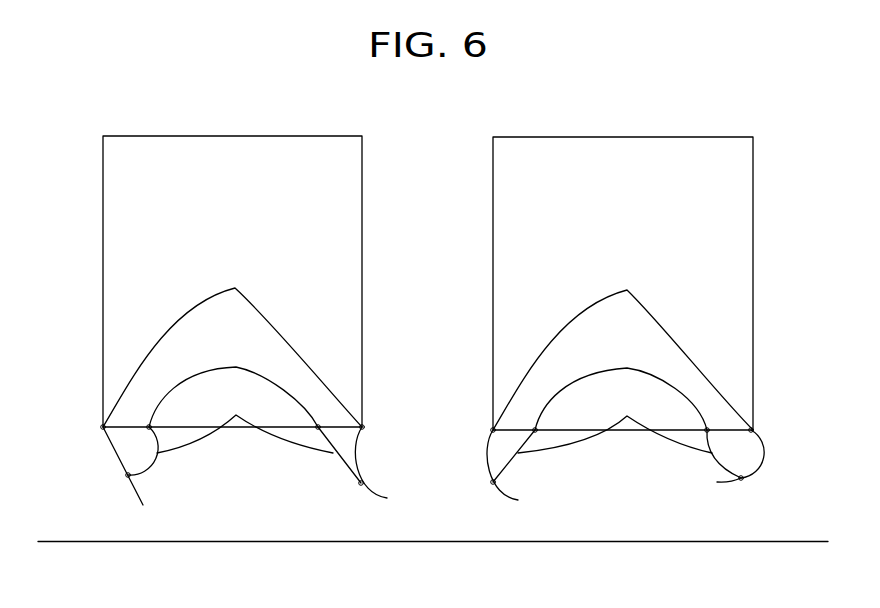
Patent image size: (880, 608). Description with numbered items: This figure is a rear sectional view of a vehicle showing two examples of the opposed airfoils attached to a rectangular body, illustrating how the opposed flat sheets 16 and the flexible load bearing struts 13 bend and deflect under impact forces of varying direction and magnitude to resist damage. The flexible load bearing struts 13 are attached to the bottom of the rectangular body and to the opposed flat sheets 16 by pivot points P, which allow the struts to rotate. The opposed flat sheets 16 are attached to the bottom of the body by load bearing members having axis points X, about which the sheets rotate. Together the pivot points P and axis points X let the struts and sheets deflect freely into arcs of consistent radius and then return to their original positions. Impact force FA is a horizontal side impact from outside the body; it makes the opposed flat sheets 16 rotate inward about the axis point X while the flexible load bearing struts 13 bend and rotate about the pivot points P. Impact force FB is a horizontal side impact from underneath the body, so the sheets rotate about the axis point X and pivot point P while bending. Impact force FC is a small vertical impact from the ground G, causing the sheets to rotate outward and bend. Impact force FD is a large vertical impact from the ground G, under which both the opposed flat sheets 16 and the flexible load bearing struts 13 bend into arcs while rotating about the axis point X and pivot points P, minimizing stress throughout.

The flexible load bearing strut 13 is at (434, 419).
The opposed flat sheet 16 is at (116, 453).
The pivot point P is at (768, 508).
The axis point X is at (428, 345).
The ground G is at (218, 542).
The impact force FA is at (112, 494).
The impact force FB is at (352, 493).
The impact force FC is at (512, 530).
The impact force FD is at (728, 510).